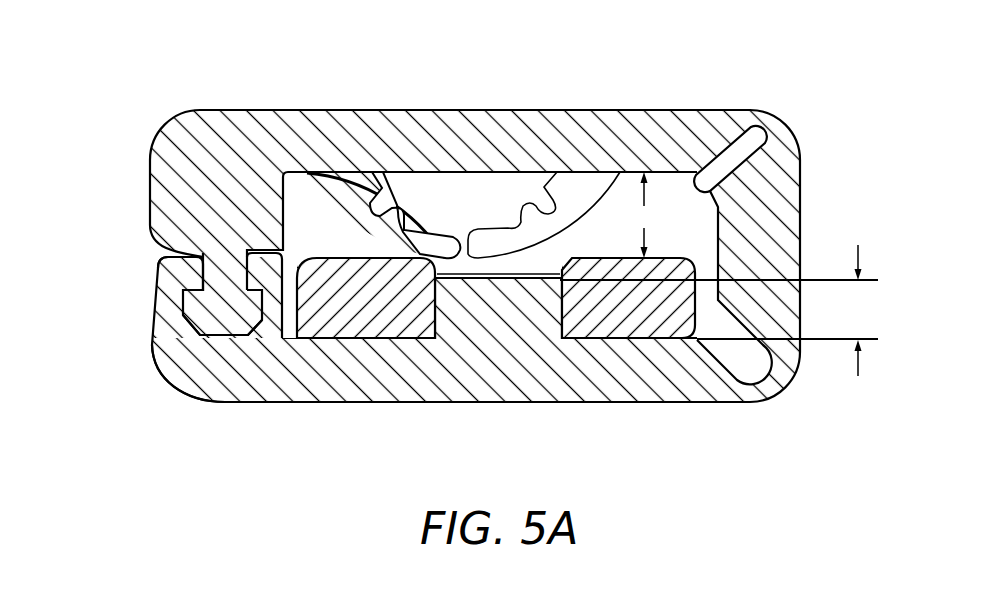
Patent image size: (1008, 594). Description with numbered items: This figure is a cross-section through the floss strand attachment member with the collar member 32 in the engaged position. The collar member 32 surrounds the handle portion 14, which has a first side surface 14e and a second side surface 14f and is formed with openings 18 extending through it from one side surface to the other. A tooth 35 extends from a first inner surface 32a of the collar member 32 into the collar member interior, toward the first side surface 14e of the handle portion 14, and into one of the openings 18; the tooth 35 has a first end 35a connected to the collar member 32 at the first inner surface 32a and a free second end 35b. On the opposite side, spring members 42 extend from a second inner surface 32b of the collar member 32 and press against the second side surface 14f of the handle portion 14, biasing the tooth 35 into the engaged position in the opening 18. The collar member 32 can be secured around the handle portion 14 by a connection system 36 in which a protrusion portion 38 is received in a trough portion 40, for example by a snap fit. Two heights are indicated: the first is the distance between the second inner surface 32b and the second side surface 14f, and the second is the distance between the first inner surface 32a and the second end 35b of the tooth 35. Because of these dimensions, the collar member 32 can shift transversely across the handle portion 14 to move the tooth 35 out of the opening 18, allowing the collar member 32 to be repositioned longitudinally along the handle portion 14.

The handle portion 14 is at (326, 296).
The first side surface 14e is at (670, 340).
The second side surface 14f is at (341, 256).
The openings 18 is at (517, 265).
The collar member 32 is at (680, 115).
The first inner surface 32a is at (306, 321).
The second inner surface 32b is at (733, 193).
The tooth 35 is at (452, 303).
The first end of the tooth 35a is at (470, 276).
The second end of the tooth 35b is at (560, 290).
The connection system 36 is at (116, 242).
The protrusion portion 38 is at (212, 308).
The trough portion 40 is at (202, 340).
The spring members 42 is at (390, 205).